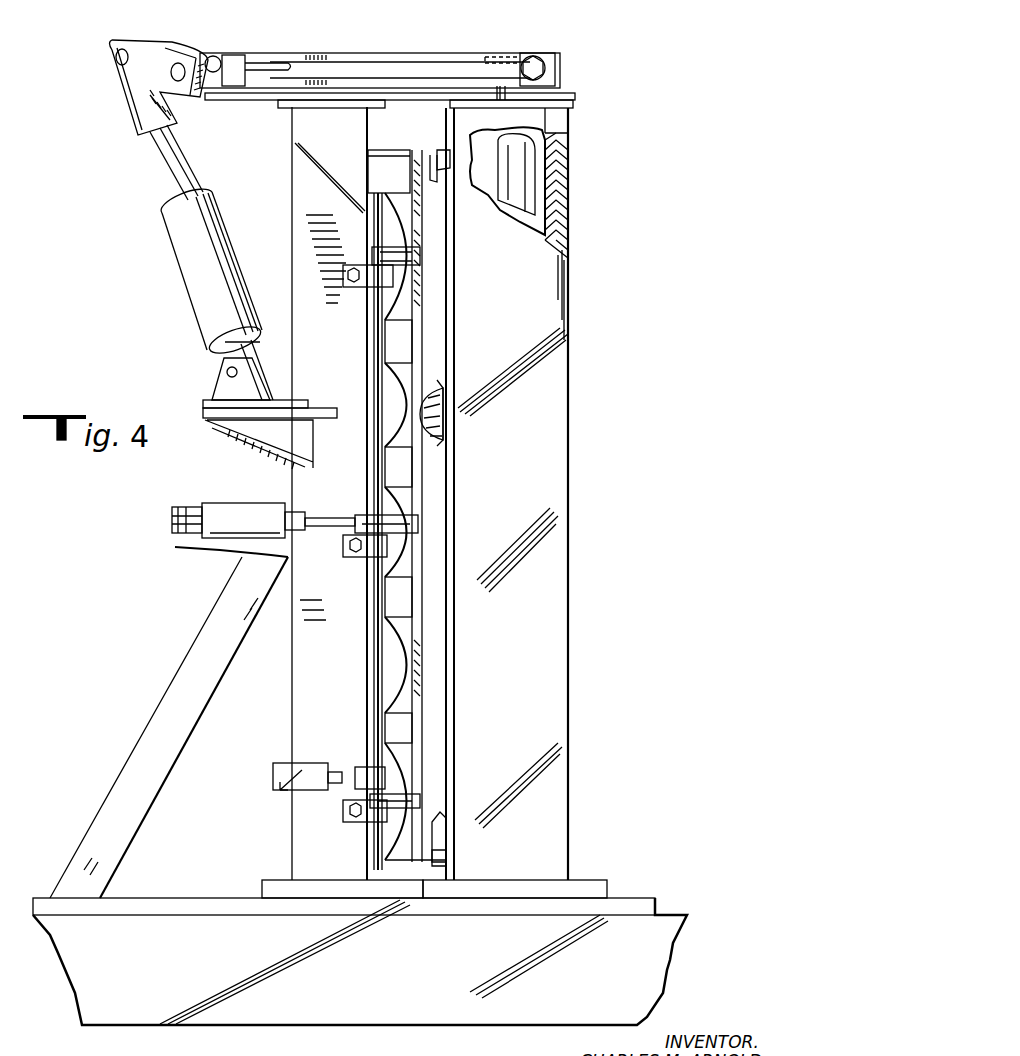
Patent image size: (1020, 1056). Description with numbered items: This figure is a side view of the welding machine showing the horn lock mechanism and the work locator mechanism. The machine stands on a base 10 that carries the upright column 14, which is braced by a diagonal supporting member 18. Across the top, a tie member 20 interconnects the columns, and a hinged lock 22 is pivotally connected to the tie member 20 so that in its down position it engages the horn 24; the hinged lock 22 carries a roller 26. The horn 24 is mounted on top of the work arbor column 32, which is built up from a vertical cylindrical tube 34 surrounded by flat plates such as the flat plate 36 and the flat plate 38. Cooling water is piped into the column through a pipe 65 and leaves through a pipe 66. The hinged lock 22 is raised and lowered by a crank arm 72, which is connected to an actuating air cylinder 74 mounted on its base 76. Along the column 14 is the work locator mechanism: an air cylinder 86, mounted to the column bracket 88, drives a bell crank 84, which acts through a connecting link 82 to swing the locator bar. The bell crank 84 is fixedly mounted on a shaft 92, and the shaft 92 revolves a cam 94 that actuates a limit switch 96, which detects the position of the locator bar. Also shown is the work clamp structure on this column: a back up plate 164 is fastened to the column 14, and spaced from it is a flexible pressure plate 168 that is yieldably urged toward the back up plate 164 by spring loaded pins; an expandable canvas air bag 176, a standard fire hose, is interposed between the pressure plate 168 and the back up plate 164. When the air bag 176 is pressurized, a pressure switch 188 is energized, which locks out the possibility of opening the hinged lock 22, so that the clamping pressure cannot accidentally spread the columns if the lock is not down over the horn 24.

The base 10 is at (396, 988).
The upright column 14 is at (292, 240).
The diagonal supporting member 18 is at (160, 710).
The tie member 20 is at (264, 98).
The hinged lock 22 is at (440, 50).
The horn 24 is at (540, 96).
The roller 26 is at (525, 54).
The work arbor column 32 is at (586, 416).
The vertical cylindrical tube 34 is at (558, 166).
The flat plate 36 is at (565, 140).
The flat plate 38 is at (520, 470).
The pipe 65 is at (535, 192).
The pipe 66 is at (505, 195).
The crank arm 72 is at (168, 44).
The actuating air cylinder 74 is at (172, 250).
The base 76 is at (222, 360).
The connecting link 82 is at (405, 250).
The bell crank 84 is at (396, 262).
The air cylinder 86 is at (260, 520).
The column bracket 88 is at (180, 544).
The shaft 92 is at (382, 608).
The cam 94 is at (366, 768).
The limit switch 96 is at (305, 790).
The back up plate 164 is at (426, 152).
The flexible pressure plate 168 is at (443, 420).
The expandable canvas air bag 176 is at (443, 398).
The pressure switch 188 is at (446, 150).